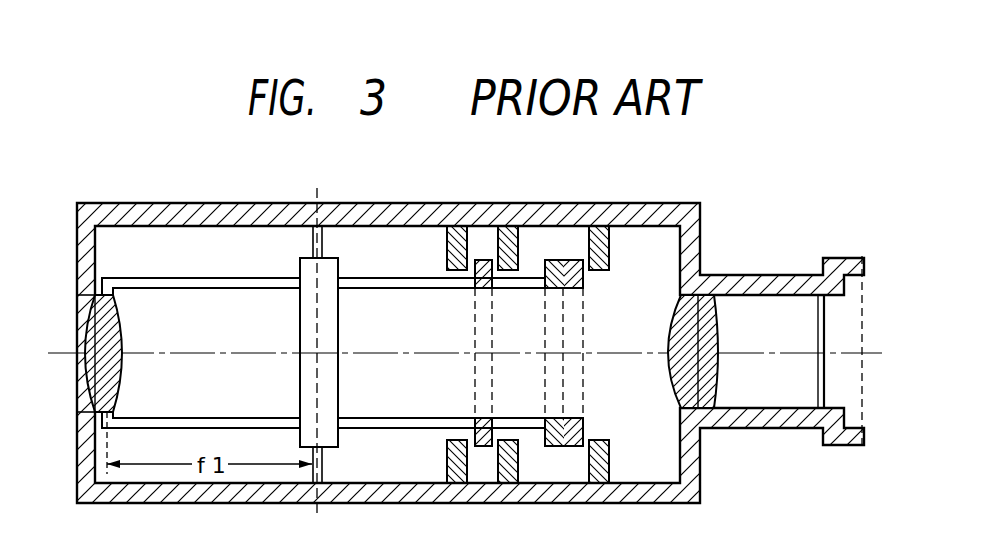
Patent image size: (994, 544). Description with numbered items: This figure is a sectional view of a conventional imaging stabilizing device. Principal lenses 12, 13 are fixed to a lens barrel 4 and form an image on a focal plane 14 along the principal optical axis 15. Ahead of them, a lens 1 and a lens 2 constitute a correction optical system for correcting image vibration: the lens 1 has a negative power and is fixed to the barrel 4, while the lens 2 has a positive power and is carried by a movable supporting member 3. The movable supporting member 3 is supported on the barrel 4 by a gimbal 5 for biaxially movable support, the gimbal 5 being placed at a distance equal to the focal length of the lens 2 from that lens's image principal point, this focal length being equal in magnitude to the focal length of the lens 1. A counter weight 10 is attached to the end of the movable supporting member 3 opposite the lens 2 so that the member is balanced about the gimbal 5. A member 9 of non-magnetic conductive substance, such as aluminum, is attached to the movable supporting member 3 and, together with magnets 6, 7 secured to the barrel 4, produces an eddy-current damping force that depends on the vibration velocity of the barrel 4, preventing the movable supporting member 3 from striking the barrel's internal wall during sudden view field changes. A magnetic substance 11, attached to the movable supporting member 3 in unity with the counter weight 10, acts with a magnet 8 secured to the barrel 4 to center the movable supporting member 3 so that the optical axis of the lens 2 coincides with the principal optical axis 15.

The lens 1 is at (80, 315).
The lens 2 is at (118, 333).
The movable supporting member 3 is at (230, 282).
The lens barrel 4 is at (210, 207).
The gimbal 5 is at (336, 259).
The magnet 6 is at (457, 225).
The magnet 7 is at (508, 226).
The magnet 8 is at (606, 226).
The member of non-magnetic conductive substance 9 is at (481, 284).
The counter weight 10 is at (553, 289).
The magnetic substance 11 is at (585, 279).
The principal lens 12 is at (670, 322).
The principal lens 13 is at (716, 326).
The focal plane 14 is at (818, 328).
The principal optical axis 15 is at (870, 353).